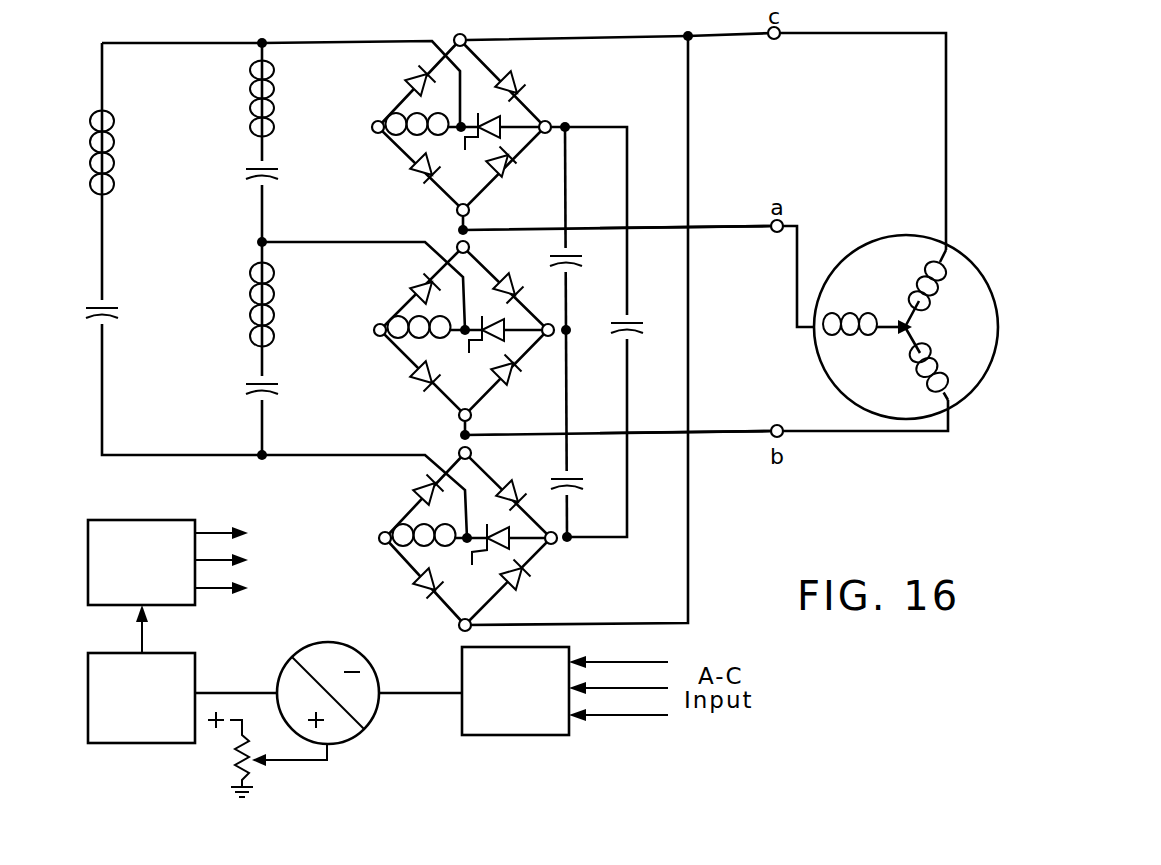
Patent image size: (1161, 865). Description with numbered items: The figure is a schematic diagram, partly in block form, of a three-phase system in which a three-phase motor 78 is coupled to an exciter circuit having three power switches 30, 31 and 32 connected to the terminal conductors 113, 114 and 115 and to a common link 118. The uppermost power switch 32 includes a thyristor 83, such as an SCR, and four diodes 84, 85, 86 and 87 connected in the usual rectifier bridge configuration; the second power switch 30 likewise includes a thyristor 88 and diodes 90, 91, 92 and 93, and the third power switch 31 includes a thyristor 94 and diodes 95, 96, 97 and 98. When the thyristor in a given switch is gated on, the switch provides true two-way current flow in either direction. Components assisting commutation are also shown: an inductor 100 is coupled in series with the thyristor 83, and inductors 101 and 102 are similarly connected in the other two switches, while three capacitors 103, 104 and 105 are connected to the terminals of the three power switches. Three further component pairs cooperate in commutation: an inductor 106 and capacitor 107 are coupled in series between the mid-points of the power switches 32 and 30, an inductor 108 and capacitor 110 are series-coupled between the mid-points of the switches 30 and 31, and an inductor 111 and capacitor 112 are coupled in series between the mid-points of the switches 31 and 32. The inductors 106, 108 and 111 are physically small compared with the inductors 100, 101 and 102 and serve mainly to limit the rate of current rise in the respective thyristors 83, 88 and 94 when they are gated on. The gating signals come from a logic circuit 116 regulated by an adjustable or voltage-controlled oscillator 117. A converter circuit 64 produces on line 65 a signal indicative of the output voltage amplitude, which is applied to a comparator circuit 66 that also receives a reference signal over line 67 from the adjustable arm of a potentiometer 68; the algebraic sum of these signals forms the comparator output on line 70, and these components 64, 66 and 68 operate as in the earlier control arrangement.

The power switch 30 is at (437, 332).
The power switch 31 is at (456, 539).
The power switch 32 is at (463, 125).
The converter circuit 64 is at (515, 706).
The line 65 is at (423, 685).
The comparator circuit 66 is at (303, 636).
The line 67 is at (330, 762).
The potentiometer 68 is at (228, 754).
The line 70 is at (243, 691).
The three-phase motor 78 is at (878, 220).
The thyristor 83 is at (510, 119).
The diode 84 is at (409, 74).
The diode 85 is at (512, 173).
The diode 86 is at (518, 77).
The diode 87 is at (414, 176).
The thyristor 88 is at (493, 350).
The diode 90 is at (416, 281).
The diode 91 is at (519, 378).
The diode 92 is at (520, 281).
The diode 93 is at (415, 383).
The thyristor 94 is at (492, 562).
The diode 95 is at (420, 485).
The diode 96 is at (526, 583).
The diode 97 is at (514, 484).
The diode 98 is at (419, 592).
The inductor 100 is at (378, 136).
The inductor 101 is at (380, 340).
The inductor 102 is at (385, 548).
The capacitor 103 is at (576, 262).
The capacitor 104 is at (582, 471).
The capacitor 105 is at (642, 339).
The inductor 106 is at (288, 99).
The capacitor 107 is at (287, 175).
The inductor 108 is at (286, 305).
The capacitor 110 is at (287, 388).
The inductor 111 is at (123, 153).
The capacitor 112 is at (125, 312).
The conductor 113 is at (713, 236).
The conductor 114 is at (712, 437).
The conductor 115 is at (700, 40).
The logic circuit 116 is at (168, 548).
The oscillator 117 is at (141, 689).
The common link 118 is at (690, 378).